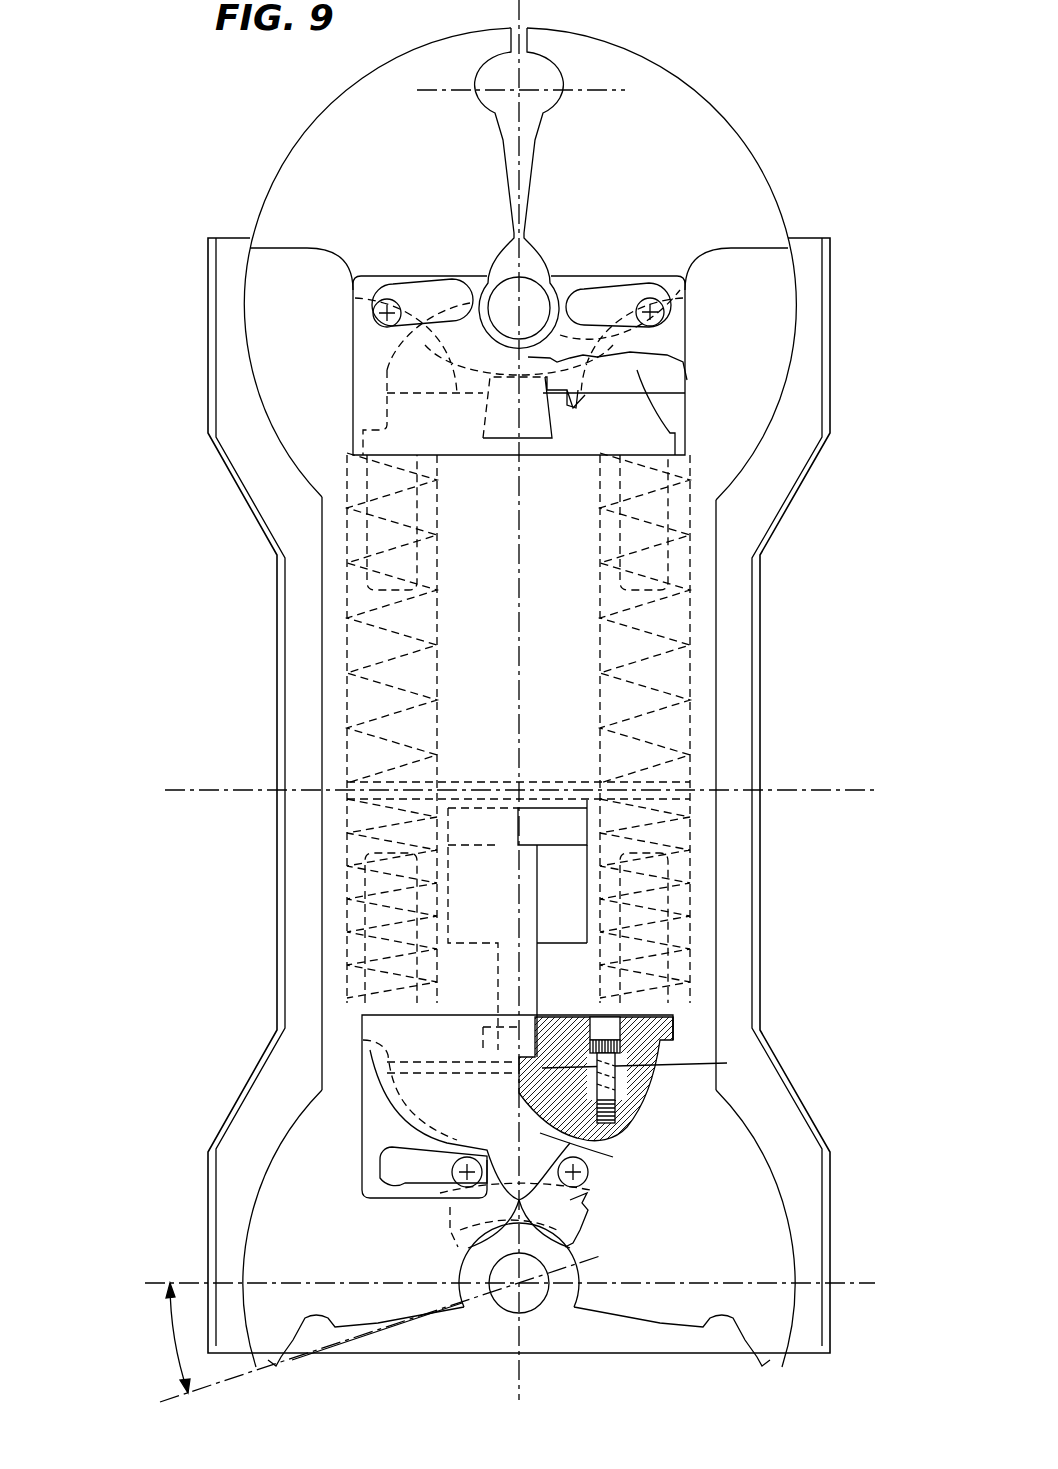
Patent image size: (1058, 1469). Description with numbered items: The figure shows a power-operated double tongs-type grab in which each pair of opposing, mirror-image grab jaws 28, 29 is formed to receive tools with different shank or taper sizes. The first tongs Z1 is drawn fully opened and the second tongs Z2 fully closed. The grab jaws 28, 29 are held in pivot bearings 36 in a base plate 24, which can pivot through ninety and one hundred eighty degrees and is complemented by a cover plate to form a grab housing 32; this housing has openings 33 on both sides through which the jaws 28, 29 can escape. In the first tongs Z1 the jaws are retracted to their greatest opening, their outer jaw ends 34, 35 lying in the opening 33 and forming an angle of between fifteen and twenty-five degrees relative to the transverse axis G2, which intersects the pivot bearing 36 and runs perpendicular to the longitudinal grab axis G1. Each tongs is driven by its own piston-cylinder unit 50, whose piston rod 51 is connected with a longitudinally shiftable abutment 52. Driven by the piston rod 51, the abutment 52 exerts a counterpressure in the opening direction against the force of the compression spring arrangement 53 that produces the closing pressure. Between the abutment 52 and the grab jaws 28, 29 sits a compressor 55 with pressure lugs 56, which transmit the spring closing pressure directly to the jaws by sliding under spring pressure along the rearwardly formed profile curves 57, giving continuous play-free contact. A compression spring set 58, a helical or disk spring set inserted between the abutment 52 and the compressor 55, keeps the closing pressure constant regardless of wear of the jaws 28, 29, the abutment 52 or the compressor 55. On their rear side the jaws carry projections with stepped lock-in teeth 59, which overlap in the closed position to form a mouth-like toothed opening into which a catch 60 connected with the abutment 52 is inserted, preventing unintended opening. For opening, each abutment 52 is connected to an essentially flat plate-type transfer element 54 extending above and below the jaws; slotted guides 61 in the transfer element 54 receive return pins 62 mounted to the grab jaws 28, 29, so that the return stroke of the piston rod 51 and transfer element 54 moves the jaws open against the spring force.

The base plate 24 is at (764, 513).
The grab jaw 28 is at (693, 155).
The grab jaw 29 is at (371, 155).
The grab housing 32 is at (280, 633).
The opening 33 is at (805, 248).
The outer jaw end 34 is at (767, 1362).
The outer jaw end 35 is at (263, 1360).
The pivot bearing 36 is at (530, 283).
The piston-cylinder unit 50 is at (562, 820).
The piston rod 51 is at (527, 967).
The abutment 52 is at (638, 417).
The compression spring arrangement 53 is at (363, 537).
The transfer element 54 is at (598, 274).
The compressor 55 is at (637, 383).
The pressure lug 56 is at (572, 1147).
The profile curve 57 is at (647, 1115).
The compression spring set 58 is at (649, 1058).
The lock-in teeth 59 is at (488, 112).
The catch 60 is at (507, 383).
The slotted guide 61 is at (430, 298).
The return pin 62 is at (385, 297).
The longitudinal grab axis G1 is at (520, 135).
The transverse axis G2 is at (330, 1283).
The first tongs Z1 is at (760, 1143).
The second tongs Z2 is at (488, 112).